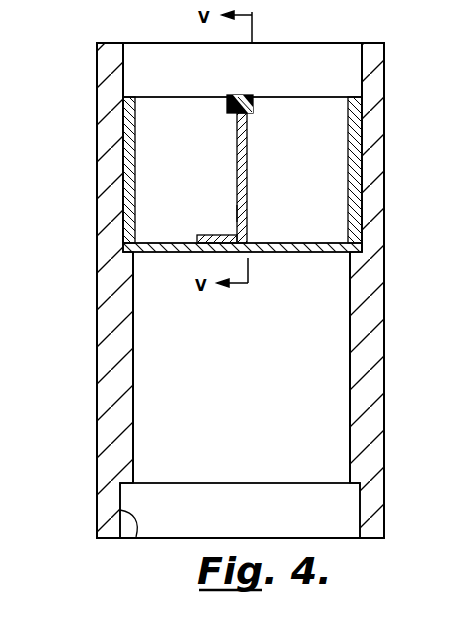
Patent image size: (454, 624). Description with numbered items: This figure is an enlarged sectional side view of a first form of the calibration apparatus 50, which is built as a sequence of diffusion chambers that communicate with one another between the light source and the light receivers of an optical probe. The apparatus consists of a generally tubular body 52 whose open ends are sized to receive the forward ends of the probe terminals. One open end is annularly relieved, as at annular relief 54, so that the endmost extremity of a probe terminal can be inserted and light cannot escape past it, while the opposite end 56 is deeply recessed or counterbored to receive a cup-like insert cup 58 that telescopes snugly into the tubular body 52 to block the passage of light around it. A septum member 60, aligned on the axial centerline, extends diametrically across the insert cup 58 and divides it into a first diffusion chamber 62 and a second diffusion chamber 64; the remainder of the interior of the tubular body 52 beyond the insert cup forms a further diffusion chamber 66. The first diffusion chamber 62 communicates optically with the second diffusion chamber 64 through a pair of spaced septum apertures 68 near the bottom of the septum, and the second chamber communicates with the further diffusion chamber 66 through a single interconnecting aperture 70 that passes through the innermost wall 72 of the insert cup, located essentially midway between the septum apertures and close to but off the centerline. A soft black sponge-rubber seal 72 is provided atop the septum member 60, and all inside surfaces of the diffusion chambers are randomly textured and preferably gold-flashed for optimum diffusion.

The calibration apparatus 50 is at (84, 274).
The tubular body 52 is at (100, 381).
The annular relief 54 is at (123, 535).
The opposite end 56 is at (317, 58).
The insert cup 58 is at (141, 117).
The septum member 60 is at (249, 151).
The first diffusion chamber 62 is at (192, 173).
The second diffusion chamber 64 is at (308, 173).
The further diffusion chamber 66 is at (254, 367).
The septum apertures 68 is at (238, 212).
The interconnecting aperture 70 is at (273, 243).
The innermost wall / seal 72 is at (237, 98).